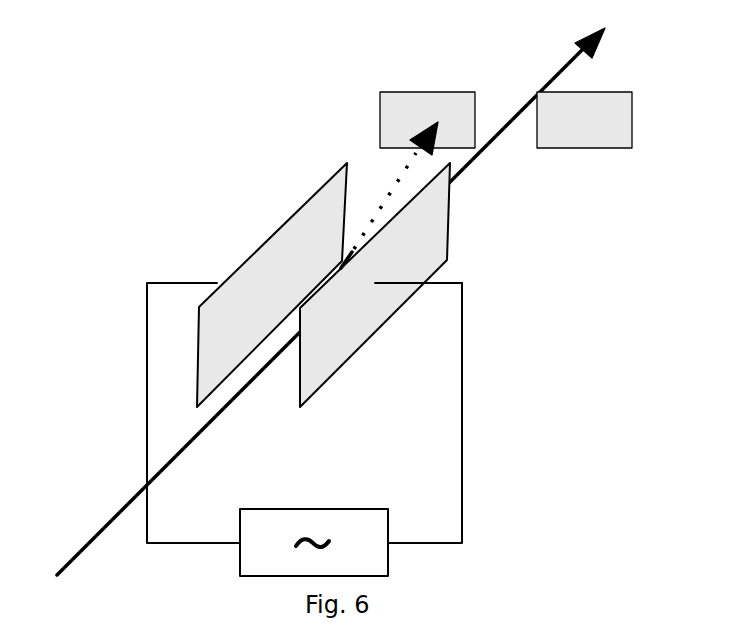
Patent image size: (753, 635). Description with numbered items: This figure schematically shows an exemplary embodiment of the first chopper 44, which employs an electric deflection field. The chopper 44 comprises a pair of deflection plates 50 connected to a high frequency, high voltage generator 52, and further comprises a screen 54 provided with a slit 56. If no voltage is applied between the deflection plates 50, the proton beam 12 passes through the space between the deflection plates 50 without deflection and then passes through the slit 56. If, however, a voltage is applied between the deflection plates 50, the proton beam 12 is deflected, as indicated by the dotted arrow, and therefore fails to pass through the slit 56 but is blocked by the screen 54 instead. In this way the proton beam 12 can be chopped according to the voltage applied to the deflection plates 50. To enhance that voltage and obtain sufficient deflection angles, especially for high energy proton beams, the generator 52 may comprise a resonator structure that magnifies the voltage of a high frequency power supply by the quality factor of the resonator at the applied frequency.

The first chopper 44 is at (128, 54).
The proton beam 12 is at (102, 538).
The deflection plates 50 is at (263, 260).
The high frequency, high voltage generator 52 is at (383, 562).
The screen 54 is at (390, 108).
The slit 56 is at (495, 103).